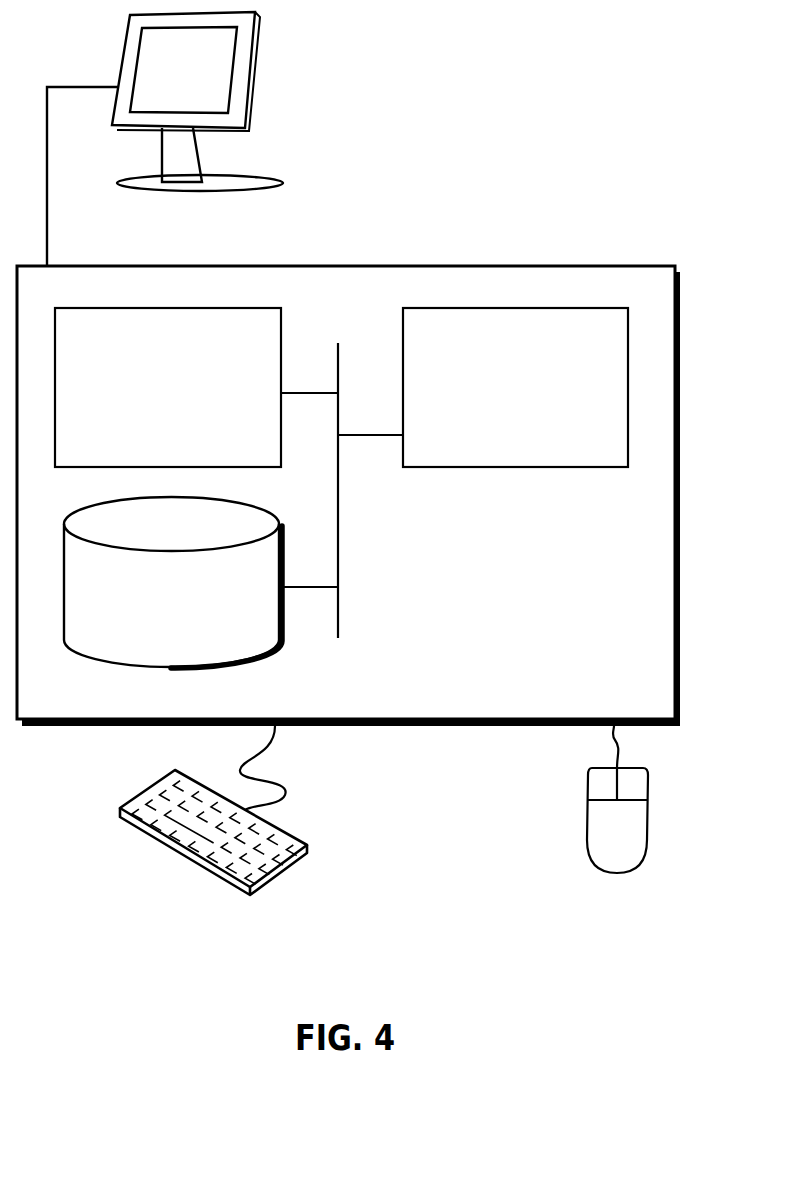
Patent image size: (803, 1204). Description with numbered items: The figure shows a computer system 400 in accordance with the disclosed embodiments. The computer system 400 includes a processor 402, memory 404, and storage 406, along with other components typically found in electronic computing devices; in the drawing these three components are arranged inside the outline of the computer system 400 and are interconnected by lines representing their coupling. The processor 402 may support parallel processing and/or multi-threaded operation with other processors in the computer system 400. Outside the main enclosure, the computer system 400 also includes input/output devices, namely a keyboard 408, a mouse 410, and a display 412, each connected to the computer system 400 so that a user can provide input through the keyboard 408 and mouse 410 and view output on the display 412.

The computer system 400 is at (392, 243).
The processor 402 is at (497, 400).
The memory 404 is at (148, 400).
The storage device 406 is at (155, 612).
The keyboard 408 is at (137, 832).
The mouse 410 is at (595, 844).
The display monitor 412 is at (165, 139).